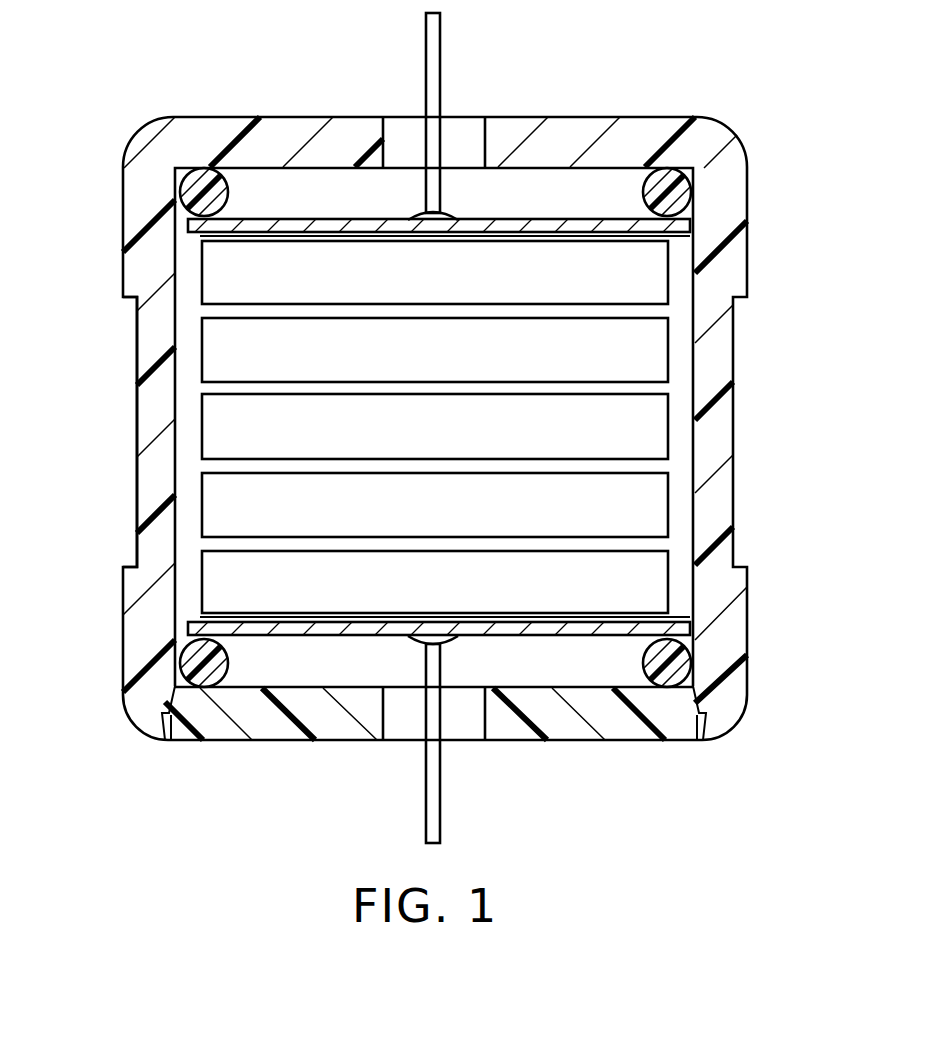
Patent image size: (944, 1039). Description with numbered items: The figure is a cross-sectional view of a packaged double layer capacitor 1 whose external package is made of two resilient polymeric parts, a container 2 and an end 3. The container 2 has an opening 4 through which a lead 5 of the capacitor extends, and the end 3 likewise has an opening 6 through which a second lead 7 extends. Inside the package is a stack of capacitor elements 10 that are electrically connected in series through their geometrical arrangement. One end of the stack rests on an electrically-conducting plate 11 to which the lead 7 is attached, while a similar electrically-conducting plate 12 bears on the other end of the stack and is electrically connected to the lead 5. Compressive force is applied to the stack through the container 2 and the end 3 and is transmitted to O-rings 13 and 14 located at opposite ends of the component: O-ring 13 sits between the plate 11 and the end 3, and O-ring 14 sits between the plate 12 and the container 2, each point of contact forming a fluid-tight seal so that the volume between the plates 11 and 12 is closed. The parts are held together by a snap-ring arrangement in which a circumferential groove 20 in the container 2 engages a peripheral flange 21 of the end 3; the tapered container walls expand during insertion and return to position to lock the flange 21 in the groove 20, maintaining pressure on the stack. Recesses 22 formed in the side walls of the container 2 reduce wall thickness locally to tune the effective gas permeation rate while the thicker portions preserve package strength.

The packaged double layer capacitor 1 is at (800, 390).
The container 2 is at (720, 262).
The end 3 is at (572, 733).
The opening 4 is at (468, 135).
The lead 5 is at (440, 38).
The opening 6 is at (465, 730).
The lead 7 is at (426, 822).
The capacitor elements 10 is at (655, 495).
The electrically-conducting plate 11 is at (205, 620).
The electrically-conducting plate 12 is at (300, 227).
The O-ring 13 is at (200, 690).
The O-ring 14 is at (690, 172).
The circumferential groove 20 is at (715, 692).
The peripheral flange 21 is at (700, 740).
The recesses 22 is at (137, 398).